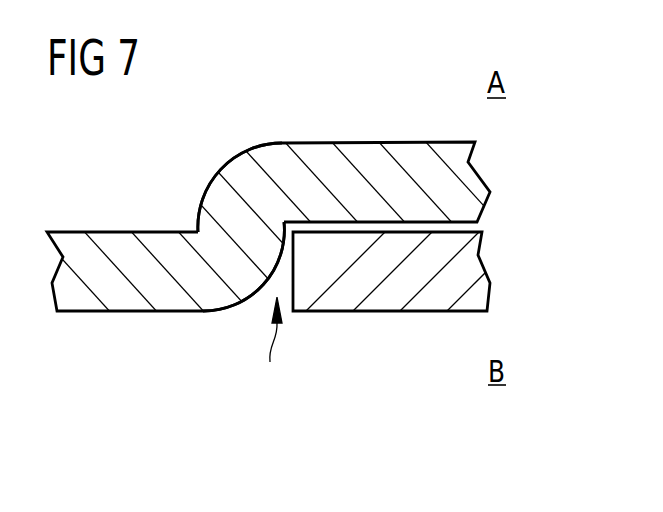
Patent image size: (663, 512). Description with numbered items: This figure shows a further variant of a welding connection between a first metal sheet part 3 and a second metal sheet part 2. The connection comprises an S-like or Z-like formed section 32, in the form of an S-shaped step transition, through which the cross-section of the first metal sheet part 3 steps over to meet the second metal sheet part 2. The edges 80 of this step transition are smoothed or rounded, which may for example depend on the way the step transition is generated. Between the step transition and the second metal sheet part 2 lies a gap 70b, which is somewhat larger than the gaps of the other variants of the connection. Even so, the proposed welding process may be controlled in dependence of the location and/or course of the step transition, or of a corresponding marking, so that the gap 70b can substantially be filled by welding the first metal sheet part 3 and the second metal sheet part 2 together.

The second metal sheet part 2 is at (433, 297).
The first metal sheet part 3 is at (101, 298).
The S-like or Z-like formed section 32 is at (240, 212).
The edges of the step transition 80 is at (251, 147).
The gap 70b is at (270, 349).